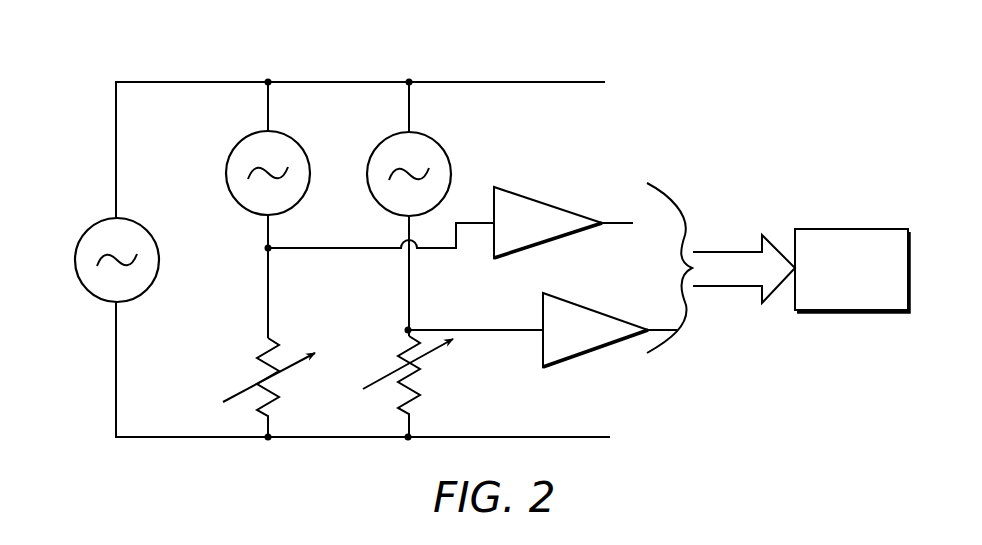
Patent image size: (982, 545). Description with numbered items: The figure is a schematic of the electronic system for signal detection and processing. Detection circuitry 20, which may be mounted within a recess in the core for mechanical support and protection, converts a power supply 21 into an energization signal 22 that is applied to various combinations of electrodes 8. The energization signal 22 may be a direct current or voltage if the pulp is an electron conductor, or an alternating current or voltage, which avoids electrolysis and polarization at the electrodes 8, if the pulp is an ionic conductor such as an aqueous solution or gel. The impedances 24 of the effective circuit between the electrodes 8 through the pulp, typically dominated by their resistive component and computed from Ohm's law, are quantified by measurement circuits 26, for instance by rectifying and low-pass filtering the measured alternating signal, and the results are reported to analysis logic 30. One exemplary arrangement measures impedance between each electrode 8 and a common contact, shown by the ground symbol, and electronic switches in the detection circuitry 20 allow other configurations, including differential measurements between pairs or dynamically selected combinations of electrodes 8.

The detection circuitry 20 is at (100, 98).
The power supply 21 is at (83, 215).
The energization signal 22 is at (227, 167).
The electrodes 8 is at (267, 326).
The impedances 24 is at (255, 380).
The measurement circuits 26 is at (540, 197).
The analysis logic 30 is at (857, 229).